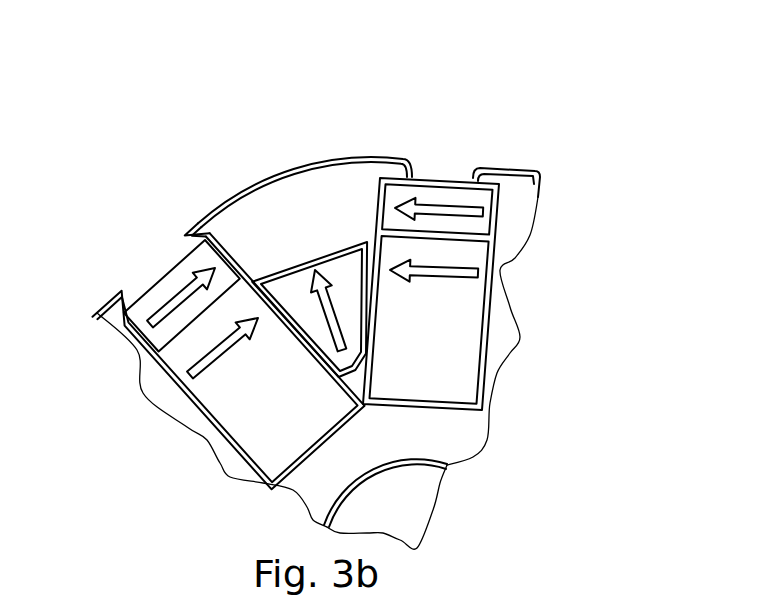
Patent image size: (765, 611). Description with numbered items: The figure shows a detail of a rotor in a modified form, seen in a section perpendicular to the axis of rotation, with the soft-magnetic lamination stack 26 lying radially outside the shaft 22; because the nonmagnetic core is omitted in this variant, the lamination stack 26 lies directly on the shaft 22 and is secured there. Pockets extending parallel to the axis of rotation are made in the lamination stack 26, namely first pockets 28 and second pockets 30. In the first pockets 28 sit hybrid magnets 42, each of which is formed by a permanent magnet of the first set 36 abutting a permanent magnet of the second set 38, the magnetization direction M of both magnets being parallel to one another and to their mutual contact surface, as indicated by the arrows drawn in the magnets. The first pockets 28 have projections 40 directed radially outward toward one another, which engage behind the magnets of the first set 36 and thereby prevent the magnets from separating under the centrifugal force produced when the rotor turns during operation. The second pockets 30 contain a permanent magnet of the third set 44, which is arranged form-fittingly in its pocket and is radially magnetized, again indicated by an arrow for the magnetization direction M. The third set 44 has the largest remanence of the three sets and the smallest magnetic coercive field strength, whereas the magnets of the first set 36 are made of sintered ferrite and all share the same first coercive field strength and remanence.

The shaft 22 is at (420, 506).
The lamination stack 26 is at (285, 207).
The first pockets 28 is at (500, 270).
The second pockets 30 is at (297, 270).
The first set 36 is at (216, 258).
The second set 38 is at (263, 483).
The projections 40 is at (395, 160).
The hybrid magnets 42 is at (473, 363).
The third set 44 is at (340, 253).
The magnetization direction M is at (143, 393).